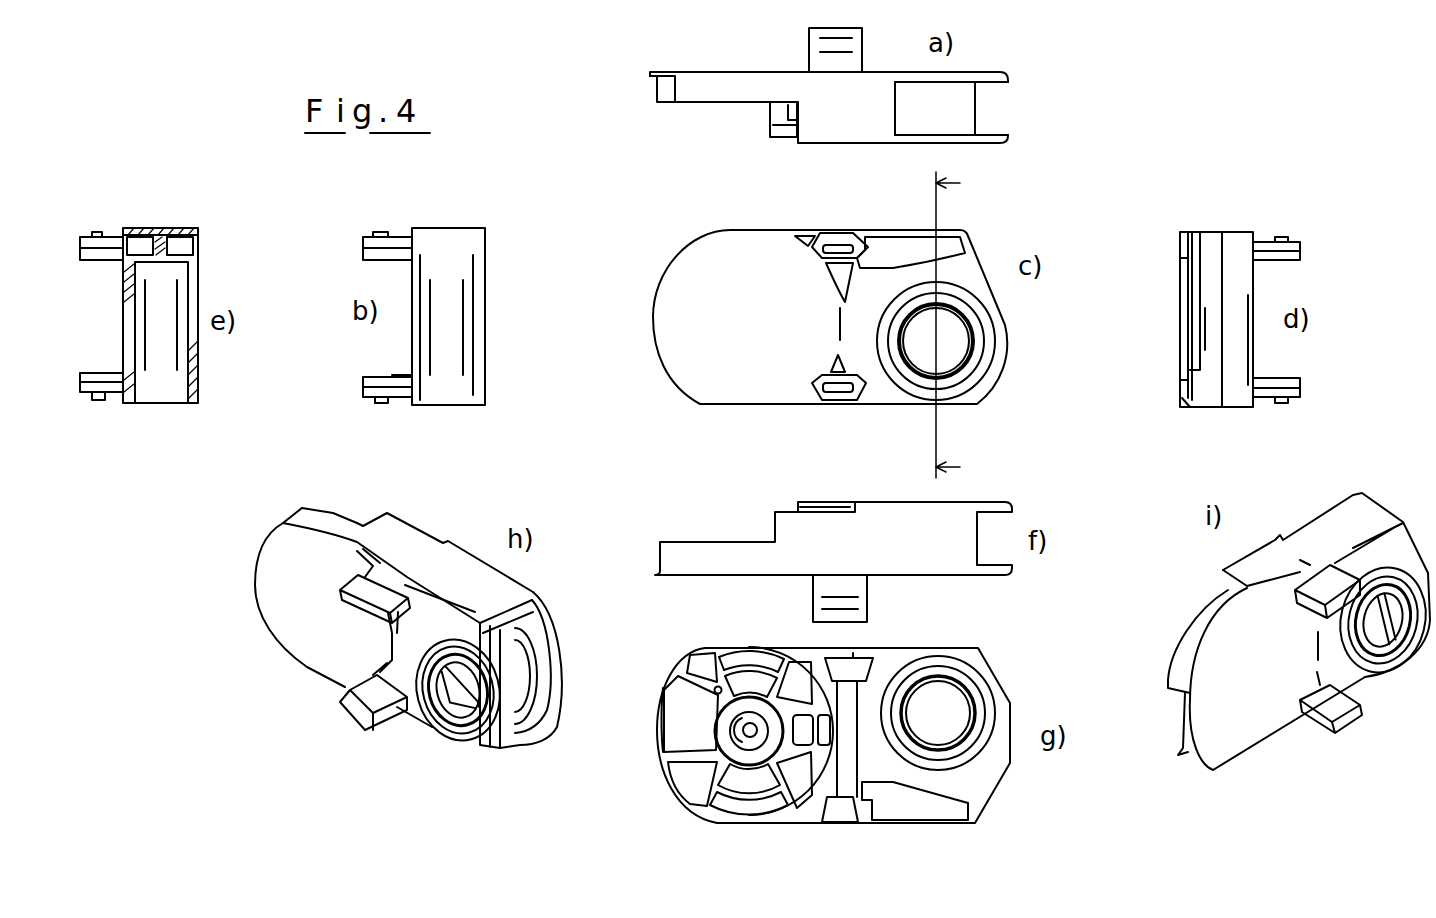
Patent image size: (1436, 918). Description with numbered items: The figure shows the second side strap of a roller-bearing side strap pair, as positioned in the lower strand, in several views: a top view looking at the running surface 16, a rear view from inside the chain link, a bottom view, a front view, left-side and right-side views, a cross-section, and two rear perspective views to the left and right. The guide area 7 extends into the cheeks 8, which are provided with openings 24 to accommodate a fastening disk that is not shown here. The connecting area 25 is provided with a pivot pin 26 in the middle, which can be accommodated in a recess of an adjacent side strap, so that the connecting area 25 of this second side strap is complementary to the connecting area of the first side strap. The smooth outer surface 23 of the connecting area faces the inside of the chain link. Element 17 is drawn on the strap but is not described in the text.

The guide area 7 is at (879, 386).
The cheeks 8 is at (1008, 135).
The running surface 16 is at (852, 128).
The connector block 17 is at (828, 61).
The smooth outer surface 23 is at (758, 346).
The openings 24 is at (957, 353).
The connecting area 25 is at (656, 398).
The pivot pin 26 is at (743, 733).